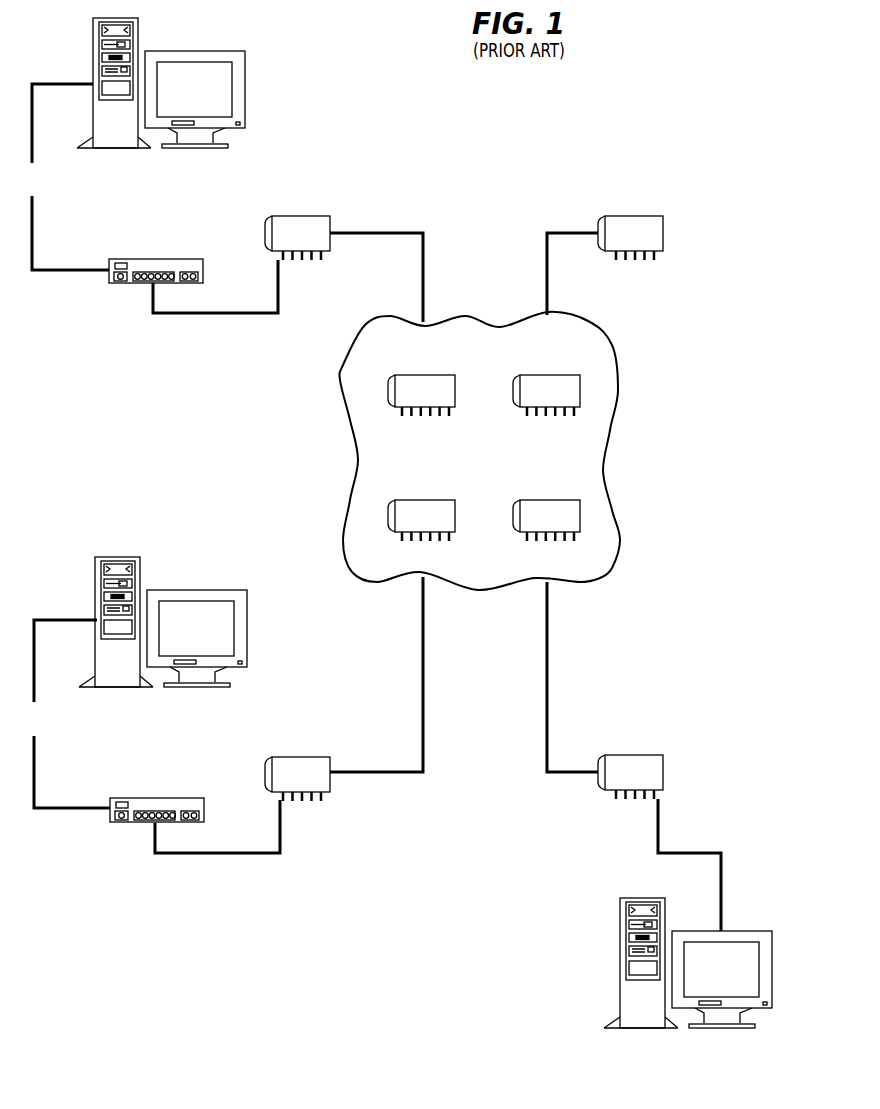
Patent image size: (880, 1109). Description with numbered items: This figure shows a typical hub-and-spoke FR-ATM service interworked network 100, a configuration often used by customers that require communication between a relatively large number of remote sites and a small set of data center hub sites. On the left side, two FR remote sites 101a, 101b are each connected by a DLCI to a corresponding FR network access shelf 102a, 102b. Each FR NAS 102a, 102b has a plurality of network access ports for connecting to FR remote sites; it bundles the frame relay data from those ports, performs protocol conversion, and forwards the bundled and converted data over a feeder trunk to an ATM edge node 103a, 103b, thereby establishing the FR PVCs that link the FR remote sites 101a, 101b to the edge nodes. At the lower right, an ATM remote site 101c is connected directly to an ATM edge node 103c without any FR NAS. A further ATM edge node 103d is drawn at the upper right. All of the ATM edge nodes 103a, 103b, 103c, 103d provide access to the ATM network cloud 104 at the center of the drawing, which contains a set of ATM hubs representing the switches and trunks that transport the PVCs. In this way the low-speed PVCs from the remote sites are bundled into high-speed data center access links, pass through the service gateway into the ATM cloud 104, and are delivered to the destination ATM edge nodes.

The hub-and-spoke network 100 is at (545, 147).
The FR remote site 101a is at (245, 72).
The FR remote site 101b is at (247, 611).
The ATM remote site 101c is at (772, 953).
The FR network access shelf 102a is at (132, 285).
The FR network access shelf 102b is at (133, 824).
The ATM edge node 103a is at (265, 234).
The ATM edge node 103b is at (265, 776).
The ATM edge node 103c is at (665, 772).
The ATM edge node 103d is at (665, 232).
The ATM network cloud 104 is at (620, 418).